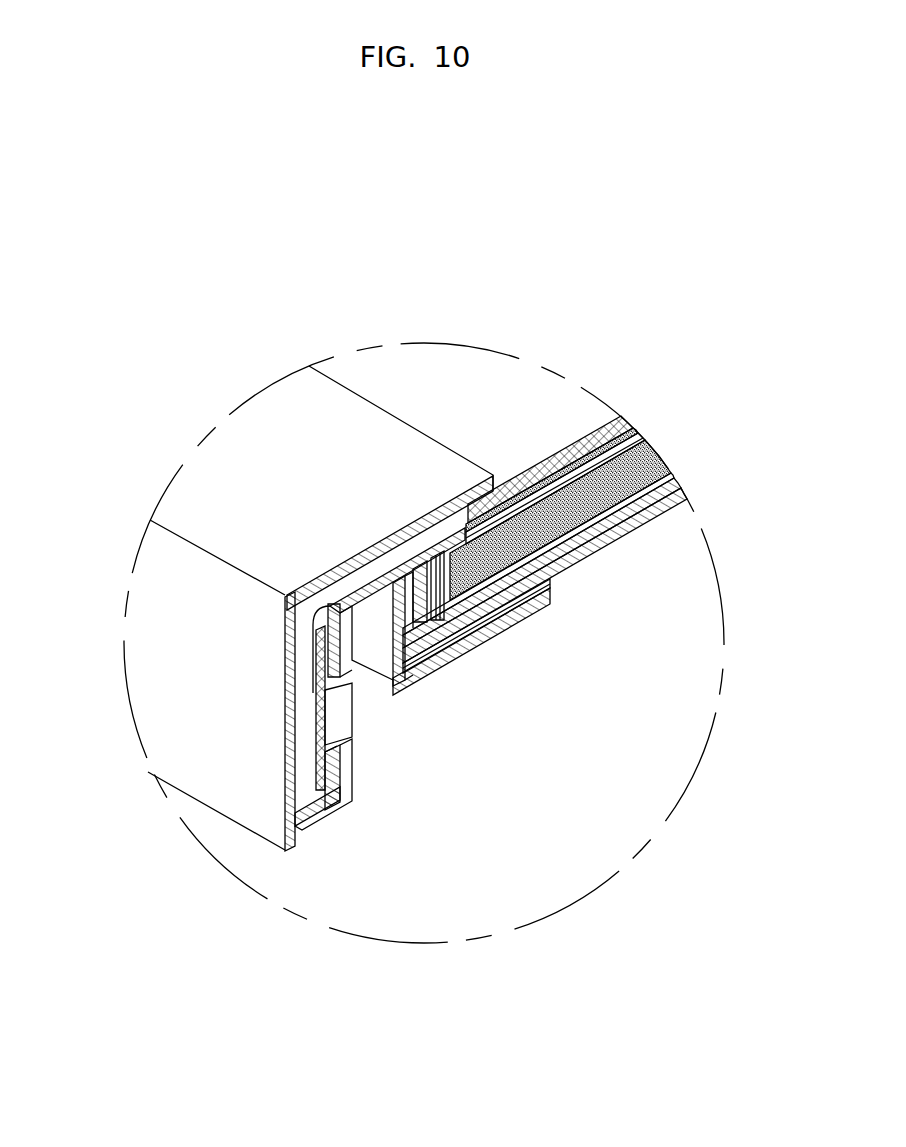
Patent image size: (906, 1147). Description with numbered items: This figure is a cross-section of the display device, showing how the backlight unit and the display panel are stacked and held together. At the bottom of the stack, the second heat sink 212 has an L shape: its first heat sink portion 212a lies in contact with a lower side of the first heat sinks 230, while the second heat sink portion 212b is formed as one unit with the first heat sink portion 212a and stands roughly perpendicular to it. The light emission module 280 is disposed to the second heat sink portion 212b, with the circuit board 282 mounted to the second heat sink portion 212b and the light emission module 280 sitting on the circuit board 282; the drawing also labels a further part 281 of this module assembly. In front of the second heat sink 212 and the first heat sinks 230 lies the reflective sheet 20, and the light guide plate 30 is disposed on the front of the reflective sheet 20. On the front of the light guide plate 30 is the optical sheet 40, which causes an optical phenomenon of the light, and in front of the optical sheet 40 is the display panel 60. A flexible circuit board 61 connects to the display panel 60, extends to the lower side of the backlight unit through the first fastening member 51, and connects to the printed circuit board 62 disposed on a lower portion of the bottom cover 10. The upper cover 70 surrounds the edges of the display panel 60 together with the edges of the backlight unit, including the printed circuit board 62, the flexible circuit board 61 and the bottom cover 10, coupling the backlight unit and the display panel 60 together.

The bottom cover 10 is at (545, 592).
The reflective sheet 20 is at (680, 500).
The light guide plate 30 is at (663, 460).
The optical sheet 40 is at (637, 440).
The display panel 60 is at (597, 436).
The first fastening member 51 is at (360, 586).
The flexible circuit board 61 is at (305, 643).
The printed circuit board 62 is at (305, 743).
The upper cover 70 is at (155, 711).
The second heat sink 212 is at (468, 676).
The first heat sink portion 212a is at (468, 617).
The second heat sink portion 212b is at (403, 635).
The first heat sinks 230 is at (637, 530).
The light emission module 280 is at (423, 427).
The first coupling part 281 is at (435, 577).
The circuit board 282 is at (418, 572).